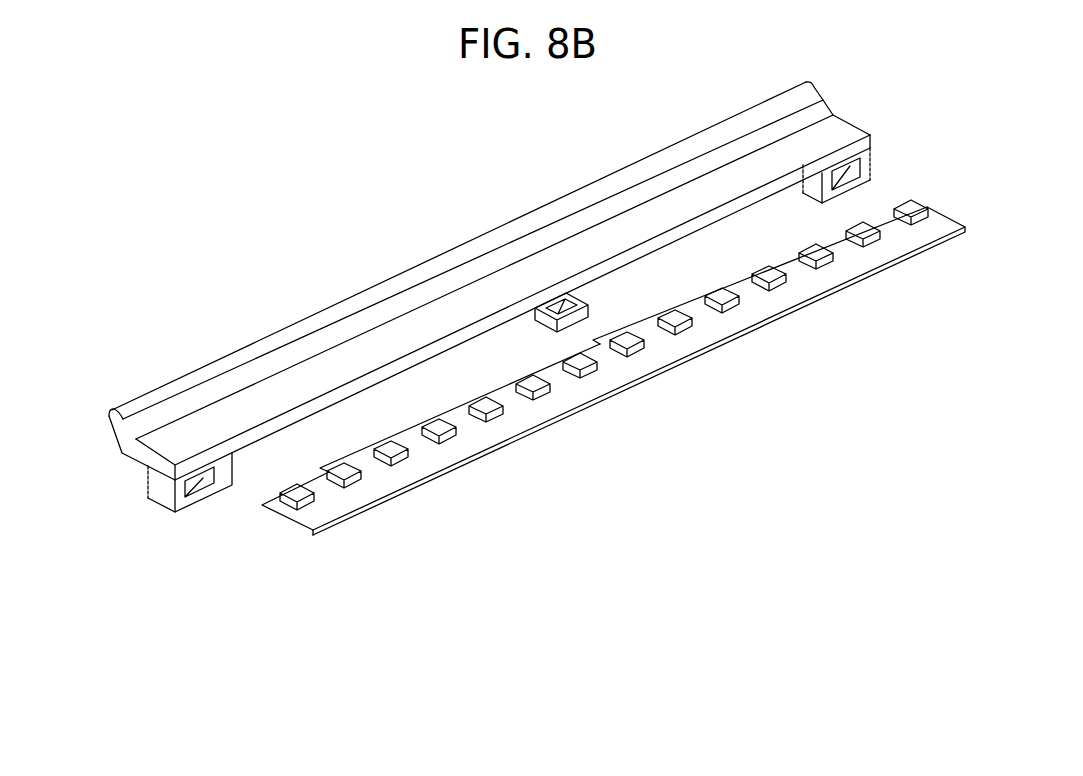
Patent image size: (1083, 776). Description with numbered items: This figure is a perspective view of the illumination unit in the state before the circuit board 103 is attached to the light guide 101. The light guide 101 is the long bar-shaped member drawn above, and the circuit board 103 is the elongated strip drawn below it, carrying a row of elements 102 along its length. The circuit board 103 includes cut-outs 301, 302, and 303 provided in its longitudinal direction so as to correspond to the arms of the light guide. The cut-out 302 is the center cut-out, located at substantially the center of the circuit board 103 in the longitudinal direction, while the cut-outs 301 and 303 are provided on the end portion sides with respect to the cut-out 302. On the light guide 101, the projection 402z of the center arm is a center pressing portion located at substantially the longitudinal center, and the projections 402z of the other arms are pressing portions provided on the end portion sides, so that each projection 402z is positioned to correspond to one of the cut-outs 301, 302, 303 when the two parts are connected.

The light guide 101 is at (640, 192).
The light emitting element 102 is at (305, 503).
The circuit board 103 is at (708, 334).
The cut-out 301 is at (338, 494).
The center cut-out 302 is at (596, 347).
The cut-out 303 is at (875, 213).
The projection 402z is at (208, 484).